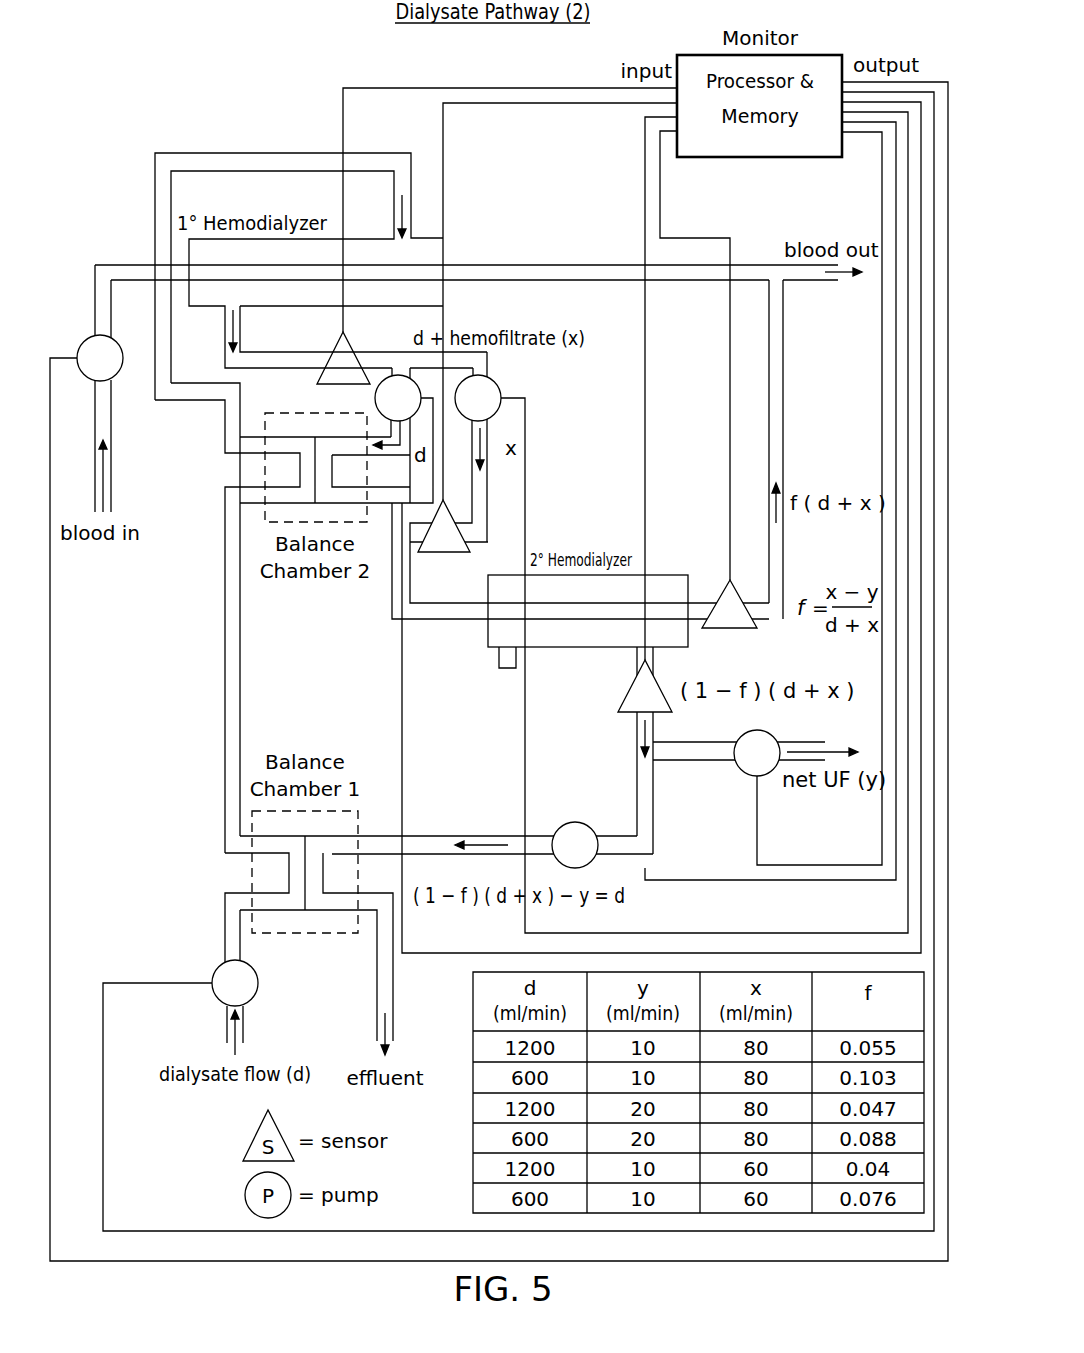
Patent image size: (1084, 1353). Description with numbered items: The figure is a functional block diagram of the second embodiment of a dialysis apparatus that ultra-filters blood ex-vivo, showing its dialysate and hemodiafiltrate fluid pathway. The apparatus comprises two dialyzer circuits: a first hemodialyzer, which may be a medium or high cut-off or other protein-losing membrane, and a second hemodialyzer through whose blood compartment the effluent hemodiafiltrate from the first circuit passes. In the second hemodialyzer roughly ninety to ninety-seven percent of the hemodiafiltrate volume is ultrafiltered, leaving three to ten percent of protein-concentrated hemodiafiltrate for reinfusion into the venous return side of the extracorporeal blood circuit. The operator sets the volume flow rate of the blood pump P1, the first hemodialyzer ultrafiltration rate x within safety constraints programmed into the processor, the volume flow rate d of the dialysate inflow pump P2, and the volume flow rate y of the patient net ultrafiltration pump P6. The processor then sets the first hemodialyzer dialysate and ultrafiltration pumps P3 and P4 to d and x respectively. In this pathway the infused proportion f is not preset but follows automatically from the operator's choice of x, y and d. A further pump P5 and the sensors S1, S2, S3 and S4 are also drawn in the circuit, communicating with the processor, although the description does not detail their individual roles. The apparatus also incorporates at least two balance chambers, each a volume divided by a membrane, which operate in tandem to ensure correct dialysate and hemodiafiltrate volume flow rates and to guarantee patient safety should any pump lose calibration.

The blood pump P1 is at (100, 358).
The dialysate inflow pump P2 is at (235, 983).
The first hemodialyzer dialysate pump P3 is at (398, 398).
The first hemodialyzer ultrafiltration pump P4 is at (478, 398).
The net ultrafiltration pump P5 is at (757, 753).
The patient net ultrafiltration pump P6 is at (575, 845).
The sensor 1 S1 is at (343, 360).
The sensor 2 S2 is at (444, 528).
The sensor 3 S3 is at (729, 606).
The sensor 4 S4 is at (645, 688).